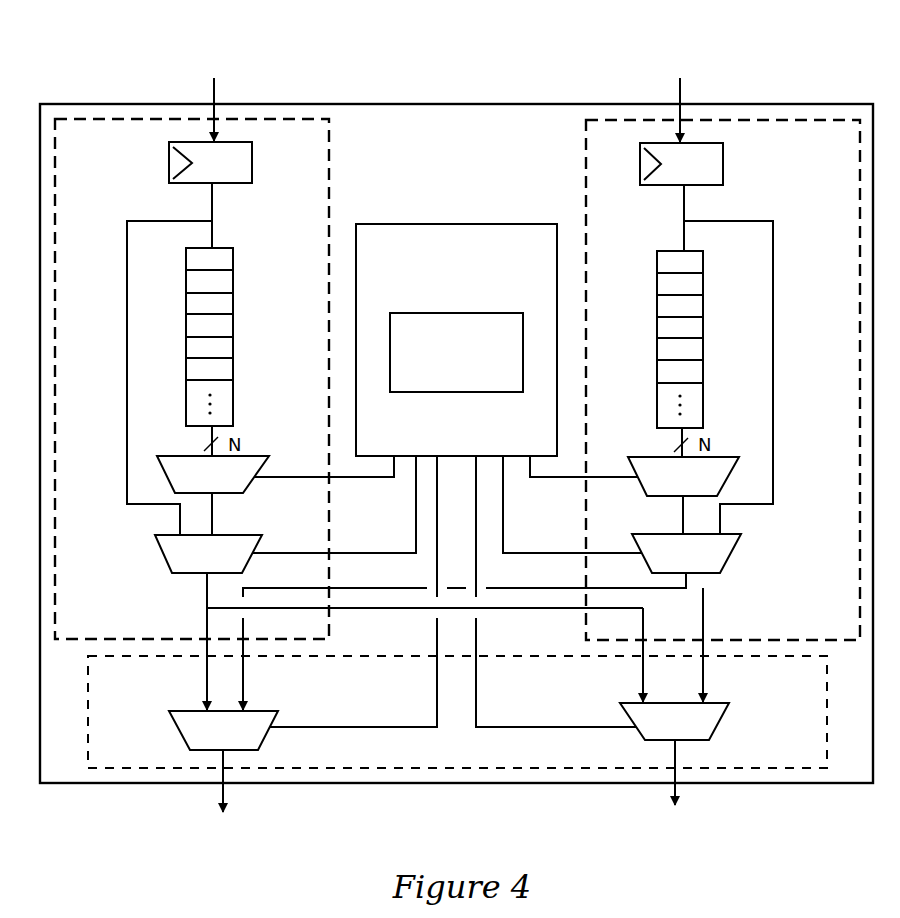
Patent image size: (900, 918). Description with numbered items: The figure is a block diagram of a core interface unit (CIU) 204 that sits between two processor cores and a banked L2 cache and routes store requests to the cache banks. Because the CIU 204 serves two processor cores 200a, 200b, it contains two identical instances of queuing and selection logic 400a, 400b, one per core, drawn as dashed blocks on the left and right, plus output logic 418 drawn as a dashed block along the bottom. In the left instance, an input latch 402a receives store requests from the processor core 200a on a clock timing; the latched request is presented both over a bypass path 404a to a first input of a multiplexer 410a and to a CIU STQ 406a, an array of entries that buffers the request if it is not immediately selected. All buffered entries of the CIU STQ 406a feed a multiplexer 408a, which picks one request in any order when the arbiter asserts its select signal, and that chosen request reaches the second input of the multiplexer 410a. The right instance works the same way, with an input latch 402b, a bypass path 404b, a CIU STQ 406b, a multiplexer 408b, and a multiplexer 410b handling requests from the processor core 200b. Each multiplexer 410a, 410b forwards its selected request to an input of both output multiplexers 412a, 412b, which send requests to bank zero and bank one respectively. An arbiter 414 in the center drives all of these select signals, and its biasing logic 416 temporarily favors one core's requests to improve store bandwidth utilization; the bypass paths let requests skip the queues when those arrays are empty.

The core interface unit 204 is at (496, 151).
The processor core 200a is at (214, 82).
The processor core 200b is at (681, 82).
The queuing and selection logic 400a is at (120, 162).
The queuing and selection logic 400b is at (849, 162).
The input latch 402a is at (252, 168).
The input latch 402b is at (723, 168).
The bypass path 404a is at (127, 304).
The bypass path 404b is at (773, 306).
The CIU STQ 406a is at (233, 328).
The CIU STQ 406b is at (703, 330).
The multiplexer 408a is at (191, 486).
The multiplexer 408b is at (661, 488).
The multiplexer 410a is at (186, 566).
The multiplexer 410b is at (664, 566).
The output multiplexer 412a is at (202, 743).
The output multiplexer 412b is at (653, 735).
The arbiter 414 is at (508, 261).
The biasing logic 416 is at (498, 383).
The output logic 418 is at (810, 694).